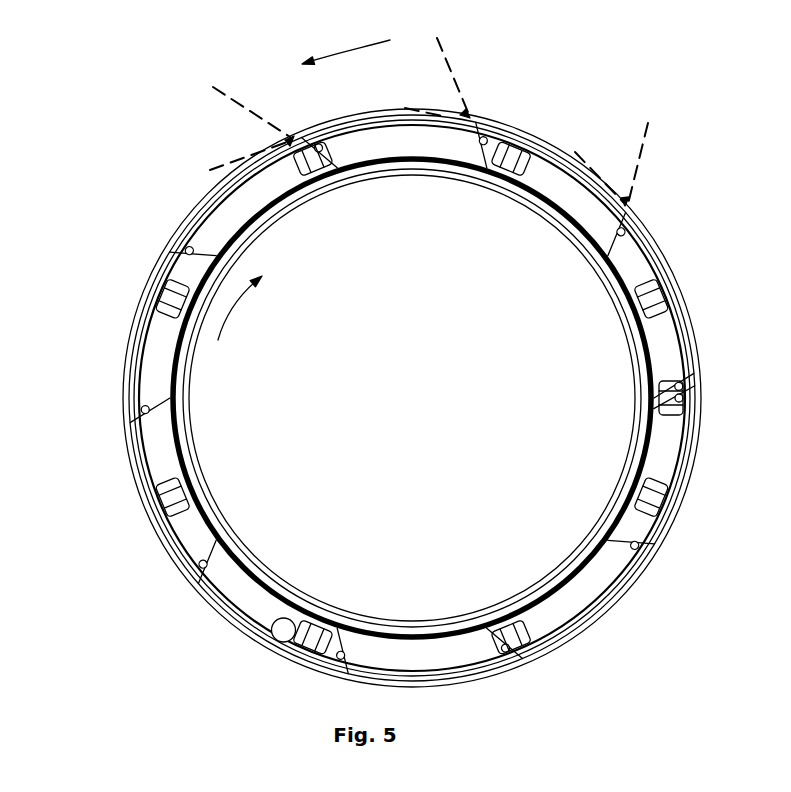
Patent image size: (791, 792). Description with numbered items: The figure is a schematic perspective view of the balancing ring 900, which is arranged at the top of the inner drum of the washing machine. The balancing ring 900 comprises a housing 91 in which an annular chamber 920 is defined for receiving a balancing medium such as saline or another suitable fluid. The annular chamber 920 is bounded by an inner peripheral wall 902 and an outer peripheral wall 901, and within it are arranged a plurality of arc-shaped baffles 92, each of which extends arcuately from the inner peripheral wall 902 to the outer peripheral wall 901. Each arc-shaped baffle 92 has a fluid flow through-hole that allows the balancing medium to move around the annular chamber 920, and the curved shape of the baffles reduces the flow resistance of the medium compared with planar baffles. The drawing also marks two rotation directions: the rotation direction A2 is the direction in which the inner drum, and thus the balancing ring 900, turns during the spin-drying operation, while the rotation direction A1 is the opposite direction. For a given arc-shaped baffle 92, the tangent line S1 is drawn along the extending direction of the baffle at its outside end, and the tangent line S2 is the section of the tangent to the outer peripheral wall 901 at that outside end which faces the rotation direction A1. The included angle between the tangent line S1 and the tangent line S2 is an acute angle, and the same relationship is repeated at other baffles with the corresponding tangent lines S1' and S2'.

The balancing ring 900 is at (117, 59).
The housing 91 is at (130, 455).
The outer peripheral wall 901 is at (128, 377).
The inner peripheral wall 902 is at (172, 418).
The arc-shaped baffle 92 is at (217, 546).
The annular chamber 920 is at (242, 603).
The rotation direction A1 is at (350, 44).
The rotation direction of the inner drum A2 is at (229, 326).
The tangent line of the arc-shaped baffle S1 is at (663, 165).
The tangent line of the outer peripheral wall S2 is at (597, 160).
The tangent line of the arc-shaped baffle S1' is at (465, 59).
The tangent line of the outer peripheral wall S2' is at (426, 85).